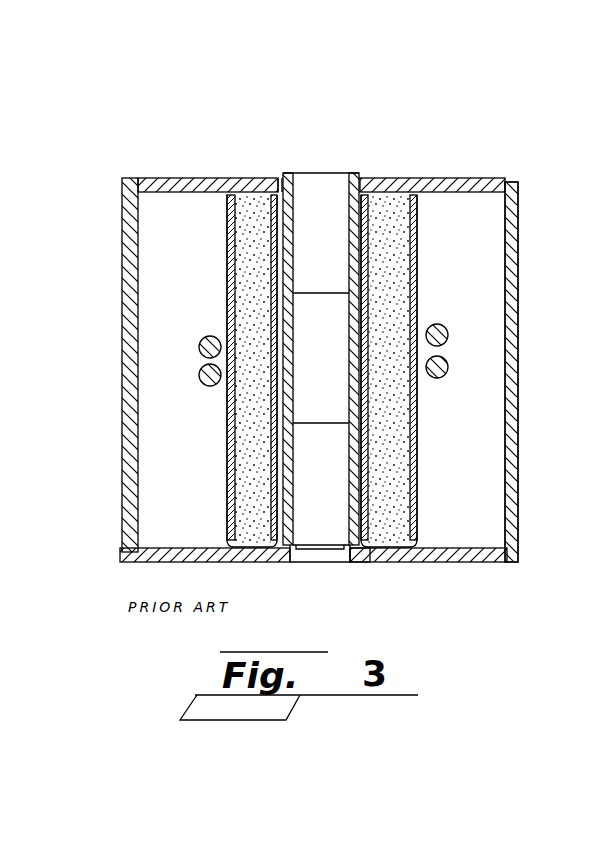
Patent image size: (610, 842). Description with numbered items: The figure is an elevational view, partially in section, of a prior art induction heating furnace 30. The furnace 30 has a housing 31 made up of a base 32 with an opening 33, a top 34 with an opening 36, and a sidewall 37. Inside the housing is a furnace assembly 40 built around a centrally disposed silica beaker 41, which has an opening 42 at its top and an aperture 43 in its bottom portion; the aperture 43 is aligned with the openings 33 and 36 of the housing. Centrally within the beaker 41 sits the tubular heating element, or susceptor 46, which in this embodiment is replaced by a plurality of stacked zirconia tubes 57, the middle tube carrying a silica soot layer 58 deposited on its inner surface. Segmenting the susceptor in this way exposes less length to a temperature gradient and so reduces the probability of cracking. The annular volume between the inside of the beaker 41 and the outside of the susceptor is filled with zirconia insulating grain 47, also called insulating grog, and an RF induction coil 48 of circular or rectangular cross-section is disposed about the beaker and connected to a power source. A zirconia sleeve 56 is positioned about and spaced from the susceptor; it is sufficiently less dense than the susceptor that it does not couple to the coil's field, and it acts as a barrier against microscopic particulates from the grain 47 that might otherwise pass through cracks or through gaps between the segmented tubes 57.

The furnace 30 is at (399, 134).
The housing 31 is at (521, 187).
The base 32 is at (445, 562).
The opening 33 is at (350, 562).
The top 34 is at (207, 178).
The opening 36 is at (279, 178).
The sidewall 37 is at (512, 262).
The furnace assembly 40 is at (419, 391).
The beaker 41 is at (412, 494).
The opening 42 is at (230, 205).
The aperture 43 is at (305, 562).
The tubular heating element 46 is at (326, 178).
The zirconia insulating grain 47 is at (400, 240).
The RF induction coil 48 is at (442, 325).
The zirconia sleeve 56 is at (391, 186).
The stacked zirconia tubes 57 is at (293, 232).
The silica soot layer 58 is at (293, 312).